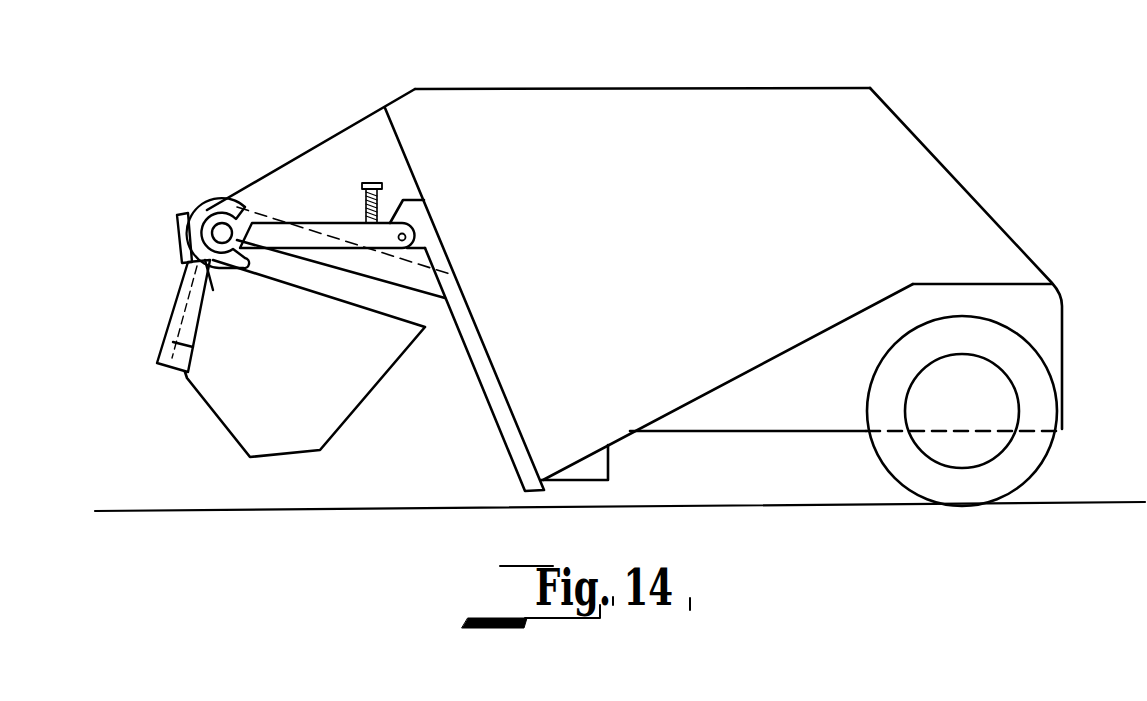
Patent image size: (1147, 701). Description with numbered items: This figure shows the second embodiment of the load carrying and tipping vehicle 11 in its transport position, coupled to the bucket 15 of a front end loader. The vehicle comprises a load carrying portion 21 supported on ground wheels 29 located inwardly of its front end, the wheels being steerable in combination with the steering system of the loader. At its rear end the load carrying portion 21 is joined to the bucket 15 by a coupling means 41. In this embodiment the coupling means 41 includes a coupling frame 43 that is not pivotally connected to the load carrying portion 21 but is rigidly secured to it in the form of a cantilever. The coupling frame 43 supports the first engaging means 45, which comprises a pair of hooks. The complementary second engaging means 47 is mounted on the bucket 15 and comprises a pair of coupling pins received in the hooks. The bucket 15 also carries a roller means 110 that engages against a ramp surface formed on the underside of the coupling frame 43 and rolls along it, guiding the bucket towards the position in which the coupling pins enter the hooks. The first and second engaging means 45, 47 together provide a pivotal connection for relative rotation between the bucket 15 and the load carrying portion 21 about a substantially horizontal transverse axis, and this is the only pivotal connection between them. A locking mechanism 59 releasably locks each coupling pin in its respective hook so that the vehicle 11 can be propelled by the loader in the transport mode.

The load carrying and tipping vehicle 11 is at (648, 87).
The load carrying portion 21 is at (777, 88).
The coupling means 41 is at (269, 172).
The coupling frame 43 is at (324, 148).
The locking mechanism 59 is at (340, 223).
The roller means 110 is at (212, 203).
The second engaging means 47 is at (218, 230).
The first engaging means 45 is at (200, 232).
The bucket 15 is at (373, 388).
The ground wheels 29 is at (1033, 453).